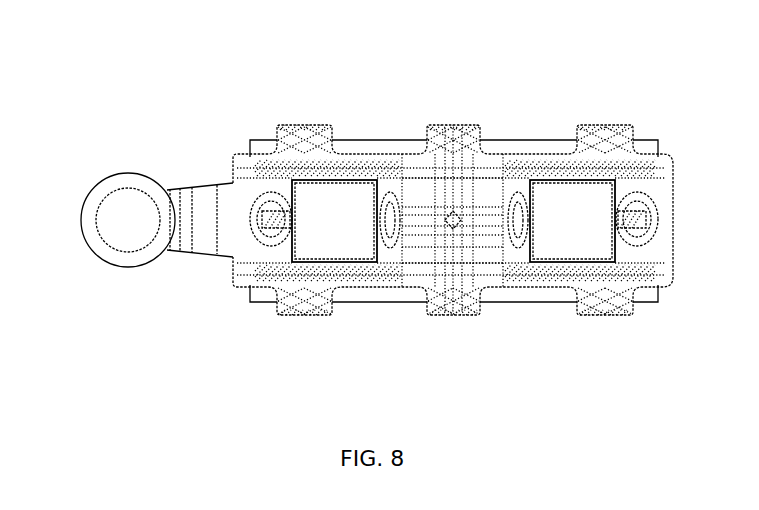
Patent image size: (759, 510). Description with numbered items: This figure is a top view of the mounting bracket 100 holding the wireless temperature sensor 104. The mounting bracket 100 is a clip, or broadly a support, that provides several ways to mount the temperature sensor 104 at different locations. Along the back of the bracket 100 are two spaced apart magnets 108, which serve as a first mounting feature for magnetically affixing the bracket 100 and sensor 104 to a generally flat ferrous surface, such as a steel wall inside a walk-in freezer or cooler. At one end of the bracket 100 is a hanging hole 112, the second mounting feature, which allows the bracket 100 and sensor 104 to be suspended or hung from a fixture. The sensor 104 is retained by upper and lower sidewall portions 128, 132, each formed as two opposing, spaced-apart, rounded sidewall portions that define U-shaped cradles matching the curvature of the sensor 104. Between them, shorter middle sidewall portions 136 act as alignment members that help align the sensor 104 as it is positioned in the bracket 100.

The mounting bracket 100 is at (172, 126).
The wireless temperature sensor 104 is at (663, 134).
The magnets 108 is at (363, 183).
The hanging hole 112 is at (125, 264).
The upper sidewall portions 128 is at (303, 316).
The lower sidewall portions 132 is at (592, 316).
The middle sidewall portions 136 is at (453, 316).